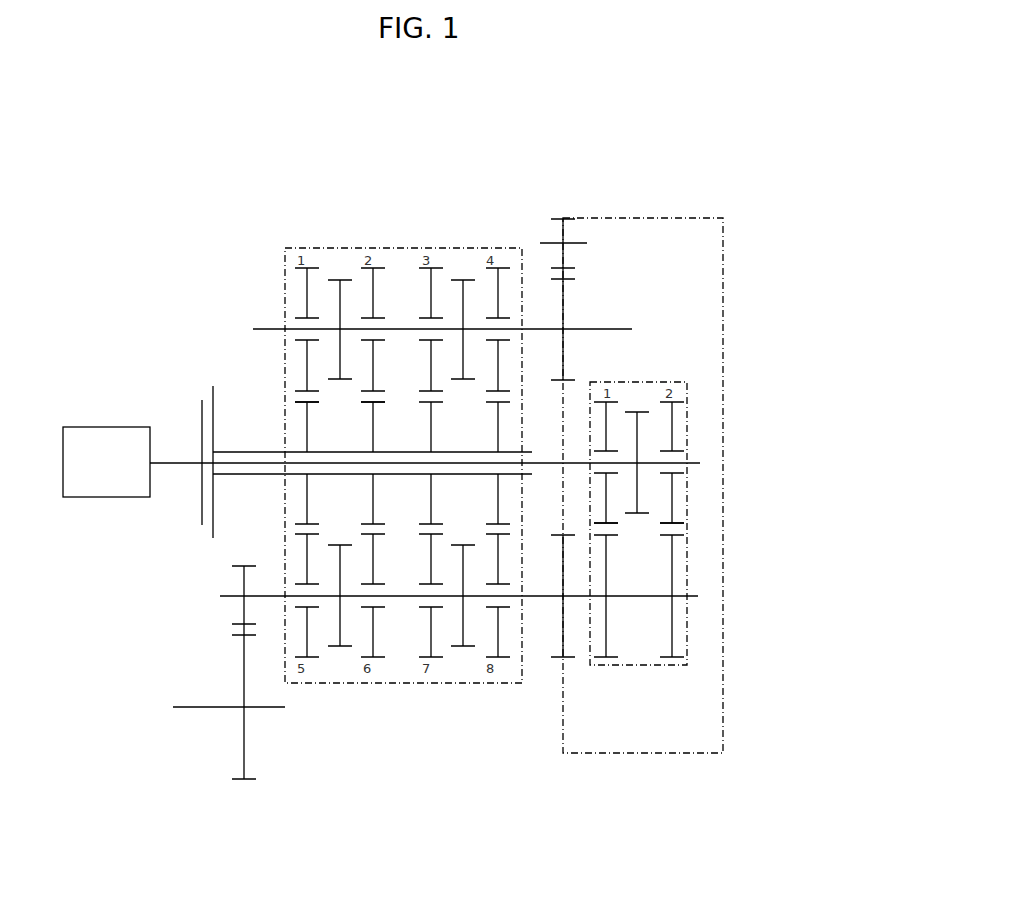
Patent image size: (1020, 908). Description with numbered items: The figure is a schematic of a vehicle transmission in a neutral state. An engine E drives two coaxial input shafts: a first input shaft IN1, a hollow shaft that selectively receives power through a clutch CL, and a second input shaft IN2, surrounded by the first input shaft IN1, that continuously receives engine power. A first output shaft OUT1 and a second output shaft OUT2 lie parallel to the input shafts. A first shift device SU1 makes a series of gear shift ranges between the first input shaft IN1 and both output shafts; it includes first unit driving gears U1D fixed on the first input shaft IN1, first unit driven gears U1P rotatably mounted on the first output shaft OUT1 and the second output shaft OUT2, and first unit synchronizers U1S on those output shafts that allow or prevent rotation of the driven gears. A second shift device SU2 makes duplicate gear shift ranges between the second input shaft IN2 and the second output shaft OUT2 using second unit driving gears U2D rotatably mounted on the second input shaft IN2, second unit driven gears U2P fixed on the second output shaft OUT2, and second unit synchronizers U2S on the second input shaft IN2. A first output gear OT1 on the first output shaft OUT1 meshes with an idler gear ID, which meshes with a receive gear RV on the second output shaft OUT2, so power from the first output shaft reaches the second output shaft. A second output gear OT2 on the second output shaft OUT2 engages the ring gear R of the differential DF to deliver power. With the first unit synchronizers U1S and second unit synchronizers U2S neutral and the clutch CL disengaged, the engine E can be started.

The engine E is at (107, 427).
The clutch CL is at (204, 392).
The first input shaft IN1 is at (512, 451).
The second input shaft IN2 is at (690, 461).
The first output shaft OUT1 is at (612, 329).
The second output shaft OUT2 is at (685, 597).
The first shift device SU1 is at (292, 249).
The second shift device SU2 is at (687, 668).
The first unit driven gears U1P is at (310, 264).
The first unit synchronizers U1S is at (340, 262).
The first unit driving gears U1D is at (373, 400).
The second unit driven gears U2P is at (672, 662).
The second unit synchronizers U2S is at (640, 410).
The second unit driving gears U2D is at (672, 400).
The idler gear ID is at (563, 218).
The first output gear OT1 is at (568, 272).
The second output gear OT2 is at (240, 567).
The receive gear RV is at (563, 660).
The differential DF is at (234, 716).
The ring gear R is at (240, 782).